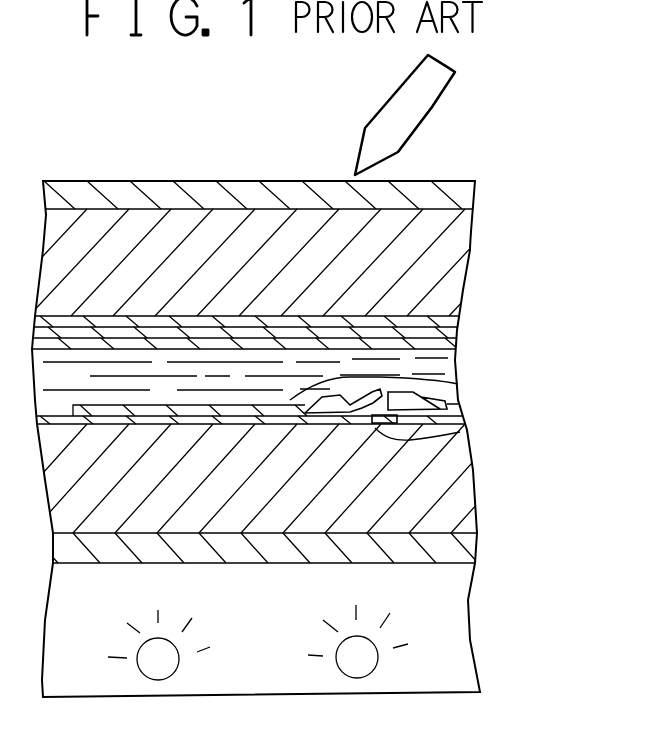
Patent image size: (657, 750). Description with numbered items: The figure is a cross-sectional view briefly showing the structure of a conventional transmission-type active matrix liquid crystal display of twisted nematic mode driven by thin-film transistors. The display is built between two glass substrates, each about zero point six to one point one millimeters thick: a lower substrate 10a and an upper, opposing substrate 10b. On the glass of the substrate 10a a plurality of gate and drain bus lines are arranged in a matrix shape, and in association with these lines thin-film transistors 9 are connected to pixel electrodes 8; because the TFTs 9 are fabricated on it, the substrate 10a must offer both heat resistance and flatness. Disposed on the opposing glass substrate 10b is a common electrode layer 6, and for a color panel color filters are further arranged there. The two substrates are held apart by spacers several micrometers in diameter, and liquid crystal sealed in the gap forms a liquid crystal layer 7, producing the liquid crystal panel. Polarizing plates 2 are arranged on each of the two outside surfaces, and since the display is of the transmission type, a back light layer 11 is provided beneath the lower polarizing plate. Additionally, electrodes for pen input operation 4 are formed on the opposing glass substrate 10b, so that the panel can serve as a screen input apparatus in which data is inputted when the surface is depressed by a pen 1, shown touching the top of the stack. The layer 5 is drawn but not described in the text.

The pen 1 is at (437, 110).
The polarizing plate 2 is at (477, 185).
The substrate 10b is at (470, 245).
The electrodes for pen input operation 4 is at (460, 315).
The color filter layer 5 is at (463, 325).
The common electrode layer 6 is at (460, 338).
The liquid crystal layer 7 is at (455, 360).
The pixel electrodes 8 is at (457, 382).
The thin-film transistors 9 is at (463, 435).
The substrate 10a is at (463, 485).
The back light layer 11 is at (457, 642).